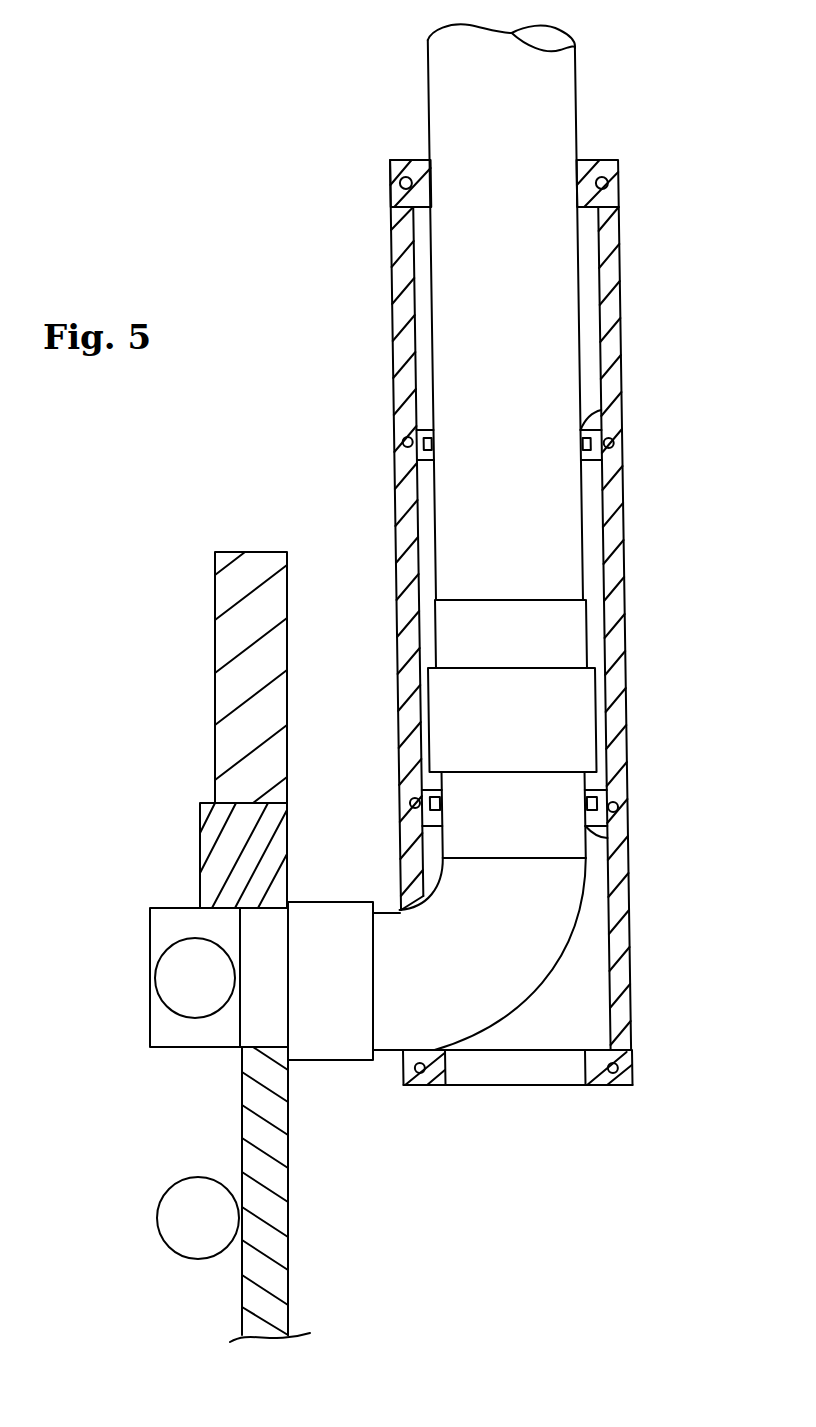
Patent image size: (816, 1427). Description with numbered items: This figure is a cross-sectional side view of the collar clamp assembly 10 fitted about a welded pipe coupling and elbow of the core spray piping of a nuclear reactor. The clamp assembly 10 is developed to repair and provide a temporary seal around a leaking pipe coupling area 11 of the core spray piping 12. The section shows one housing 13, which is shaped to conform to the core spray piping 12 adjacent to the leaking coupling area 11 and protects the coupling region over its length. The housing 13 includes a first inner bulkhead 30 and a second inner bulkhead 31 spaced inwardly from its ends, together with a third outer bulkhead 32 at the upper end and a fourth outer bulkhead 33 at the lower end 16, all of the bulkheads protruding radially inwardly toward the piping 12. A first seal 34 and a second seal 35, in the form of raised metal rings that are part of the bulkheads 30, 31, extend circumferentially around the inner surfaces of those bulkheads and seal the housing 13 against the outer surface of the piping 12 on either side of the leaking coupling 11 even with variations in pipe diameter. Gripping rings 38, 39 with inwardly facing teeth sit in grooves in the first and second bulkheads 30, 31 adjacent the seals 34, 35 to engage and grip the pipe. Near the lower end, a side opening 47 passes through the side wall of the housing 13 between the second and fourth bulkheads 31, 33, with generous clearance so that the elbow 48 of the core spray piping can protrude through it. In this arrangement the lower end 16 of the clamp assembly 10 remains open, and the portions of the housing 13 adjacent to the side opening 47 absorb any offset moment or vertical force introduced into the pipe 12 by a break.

The collar clamp assembly 10 is at (596, 605).
The leaking pipe coupling area 11 is at (445, 700).
The core spray piping 12 is at (467, 393).
The first housing 13 is at (612, 262).
The second end 16 is at (580, 1086).
The first inner bulkhead 30 is at (600, 452).
The second inner bulkhead 31 is at (608, 822).
The third outer bulkhead 32 is at (590, 185).
The fourth outer bulkhead 33 is at (600, 1070).
The first seal 34 is at (600, 425).
The second seal 35 is at (615, 845).
The gripping ring 38 is at (605, 437).
The gripping ring 39 is at (605, 793).
The side opening 47 is at (400, 900).
The elbow 48 is at (425, 1010).